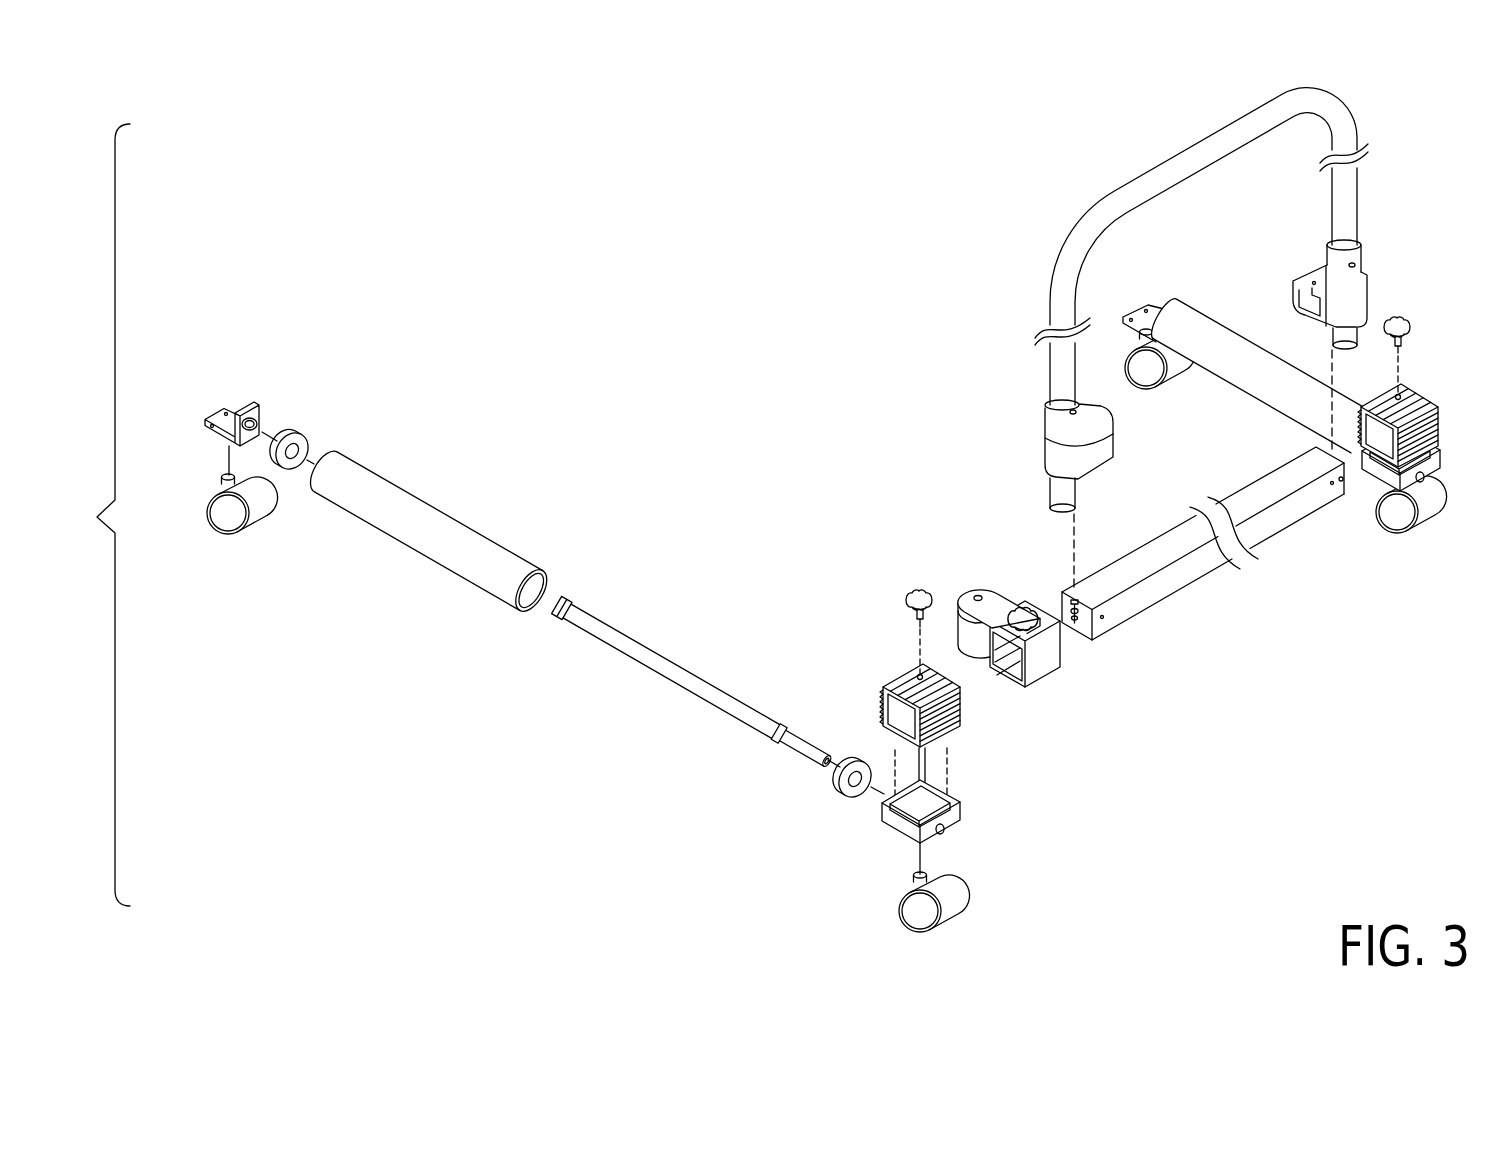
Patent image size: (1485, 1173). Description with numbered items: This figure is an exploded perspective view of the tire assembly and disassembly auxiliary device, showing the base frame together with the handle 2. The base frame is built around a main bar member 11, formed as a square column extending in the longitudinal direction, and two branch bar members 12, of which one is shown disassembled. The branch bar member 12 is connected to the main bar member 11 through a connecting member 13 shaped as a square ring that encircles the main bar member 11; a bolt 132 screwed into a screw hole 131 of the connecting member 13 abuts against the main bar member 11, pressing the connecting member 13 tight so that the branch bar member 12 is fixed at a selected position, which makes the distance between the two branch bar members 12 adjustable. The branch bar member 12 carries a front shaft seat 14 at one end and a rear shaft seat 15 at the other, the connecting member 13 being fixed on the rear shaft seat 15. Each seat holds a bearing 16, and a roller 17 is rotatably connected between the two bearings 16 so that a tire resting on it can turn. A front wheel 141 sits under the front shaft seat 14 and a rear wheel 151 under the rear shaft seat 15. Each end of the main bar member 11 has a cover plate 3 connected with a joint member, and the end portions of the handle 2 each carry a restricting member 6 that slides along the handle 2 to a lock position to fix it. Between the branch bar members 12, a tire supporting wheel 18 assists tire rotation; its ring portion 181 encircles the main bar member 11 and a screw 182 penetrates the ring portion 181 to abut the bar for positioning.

The handle 2 is at (1178, 155).
The cover plate 3 is at (1076, 626).
The restricting member 6 is at (1048, 460).
The main bar member 11 is at (1162, 590).
The branch bar member 12 is at (673, 676).
The connecting member 13 is at (914, 711).
The screw hole 131 is at (919, 676).
The bolt 132 is at (917, 592).
The front shaft seat 14 is at (221, 443).
The front wheel 141 is at (226, 532).
The rear shaft seat 15 is at (904, 838).
The rear wheel 151 is at (912, 920).
The bearing 16 is at (293, 428).
The roller 17 is at (423, 535).
The tire supporting wheel 18 is at (1007, 634).
The ring portion 181 is at (1045, 662).
The screw 182 is at (1024, 607).